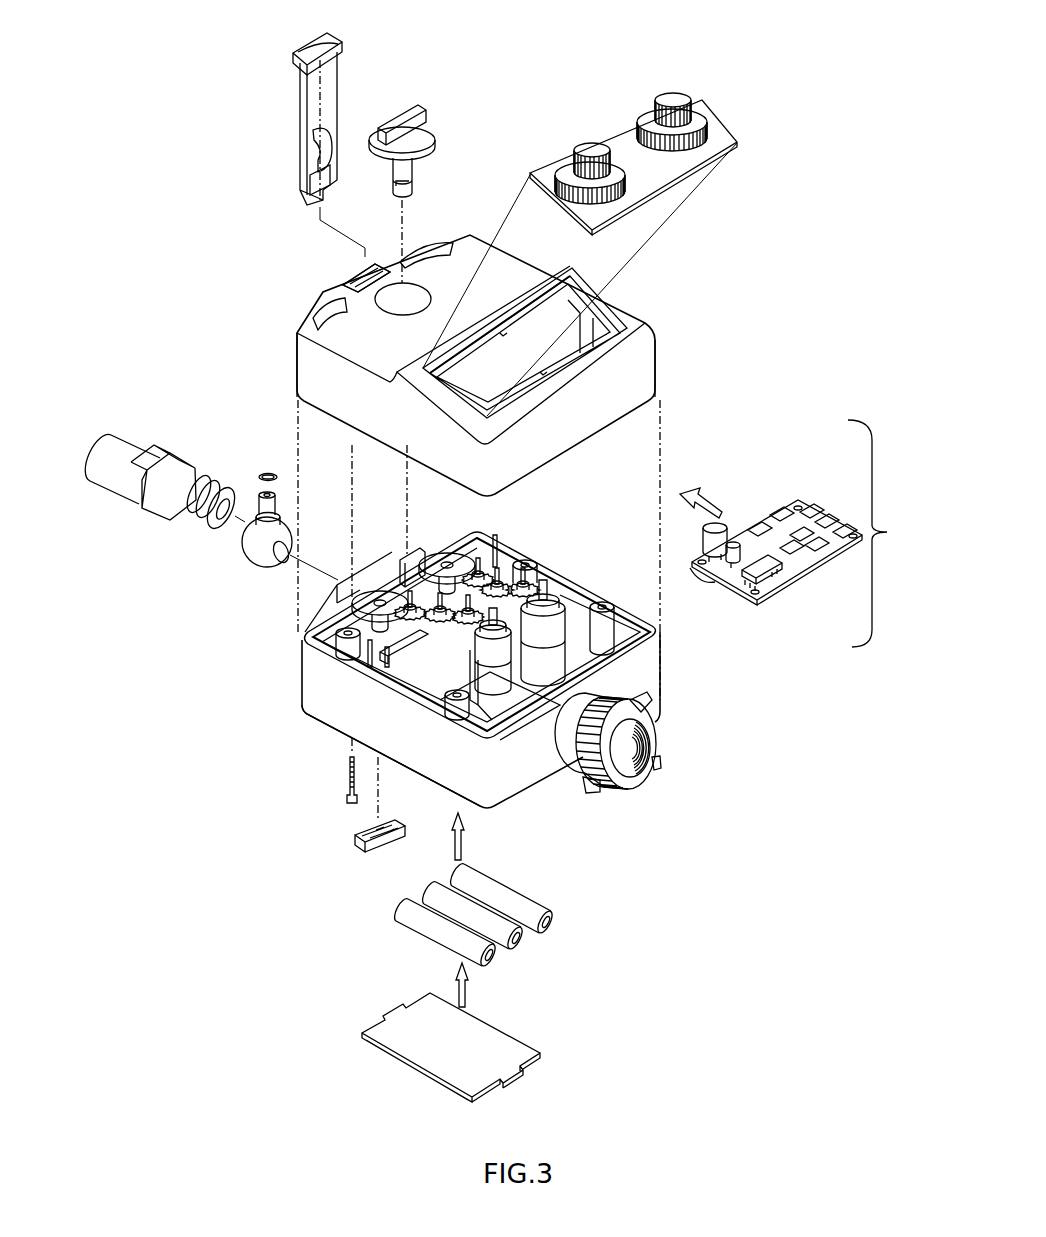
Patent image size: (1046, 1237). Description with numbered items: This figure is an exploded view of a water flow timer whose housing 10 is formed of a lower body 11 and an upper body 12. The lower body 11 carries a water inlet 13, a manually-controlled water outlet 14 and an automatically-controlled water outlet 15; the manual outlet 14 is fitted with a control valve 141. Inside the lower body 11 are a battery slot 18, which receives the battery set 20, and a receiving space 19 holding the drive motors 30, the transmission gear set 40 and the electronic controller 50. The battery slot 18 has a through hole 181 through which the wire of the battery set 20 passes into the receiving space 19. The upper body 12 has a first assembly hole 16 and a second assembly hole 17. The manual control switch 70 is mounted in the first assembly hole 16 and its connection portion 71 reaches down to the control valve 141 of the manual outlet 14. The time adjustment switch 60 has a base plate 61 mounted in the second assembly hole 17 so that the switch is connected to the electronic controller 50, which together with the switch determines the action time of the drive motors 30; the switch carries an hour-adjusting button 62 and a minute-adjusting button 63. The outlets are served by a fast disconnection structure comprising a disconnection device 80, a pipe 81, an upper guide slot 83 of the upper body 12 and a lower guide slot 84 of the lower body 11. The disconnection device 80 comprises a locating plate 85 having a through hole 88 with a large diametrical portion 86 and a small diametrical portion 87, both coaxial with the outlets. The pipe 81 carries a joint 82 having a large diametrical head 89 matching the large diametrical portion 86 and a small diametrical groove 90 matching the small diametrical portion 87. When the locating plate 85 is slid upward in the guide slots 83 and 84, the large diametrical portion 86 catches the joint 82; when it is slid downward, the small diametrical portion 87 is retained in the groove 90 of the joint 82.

The housing 10 is at (881, 533).
The lower body 11 is at (551, 659).
The upper body 12 is at (652, 372).
The water inlet 13 is at (655, 743).
The manually-controlled water outlet 14 is at (378, 568).
The automatically-controlled water outlet 15 is at (418, 548).
The first assembly hole 16 is at (422, 247).
The second assembly hole 17 is at (488, 415).
The battery slot 18 is at (490, 717).
The receiving space 19 is at (407, 655).
The battery set 20 is at (537, 880).
The drive motors 30 is at (542, 600).
The transmission gear set 40 is at (507, 558).
The electronic controller 50 is at (800, 565).
The time adjustment switch 60 is at (664, 113).
The base plate 61 is at (660, 173).
The hour-adjusting button 62 is at (705, 128).
The minute-adjusting button 63 is at (690, 112).
The manual control switch 70 is at (444, 118).
The connection portion 71 is at (405, 183).
The disconnection device 80 is at (300, 138).
The pipe 81 is at (174, 448).
The joint 82 is at (289, 471).
The upper guide slot 83 is at (375, 253).
The lower guide slot 84 is at (360, 578).
The locating plate 85 is at (330, 102).
The large diametrical portion 86 is at (315, 175).
The small diametrical portion 87 is at (313, 145).
The through hole 88 is at (263, 172).
The large diametrical head 89 is at (225, 500).
The small diametrical groove 90 is at (213, 488).
The control valve 141 is at (288, 507).
The through hole 181 is at (432, 718).